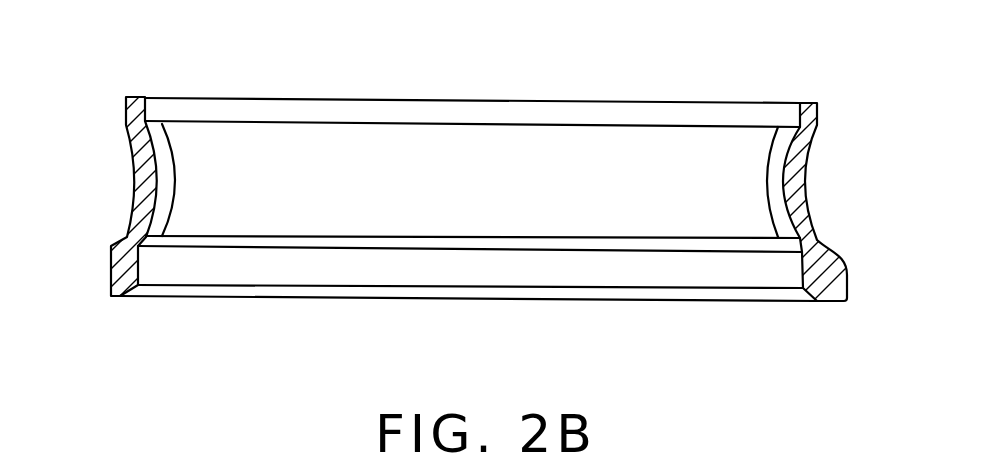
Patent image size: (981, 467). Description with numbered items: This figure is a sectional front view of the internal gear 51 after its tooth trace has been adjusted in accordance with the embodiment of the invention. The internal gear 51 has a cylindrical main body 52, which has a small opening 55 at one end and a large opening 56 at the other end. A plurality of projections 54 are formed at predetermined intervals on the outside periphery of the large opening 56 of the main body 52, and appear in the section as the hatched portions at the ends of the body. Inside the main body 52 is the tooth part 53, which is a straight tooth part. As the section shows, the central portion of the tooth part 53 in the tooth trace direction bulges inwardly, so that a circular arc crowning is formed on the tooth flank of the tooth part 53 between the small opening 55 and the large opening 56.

The internal gear 51 is at (655, 75).
The cylindrical main body 52 is at (147, 175).
The tooth part 53 is at (168, 153).
The projections 54 is at (843, 287).
The small opening 55 is at (437, 115).
The large opening 56 is at (332, 292).